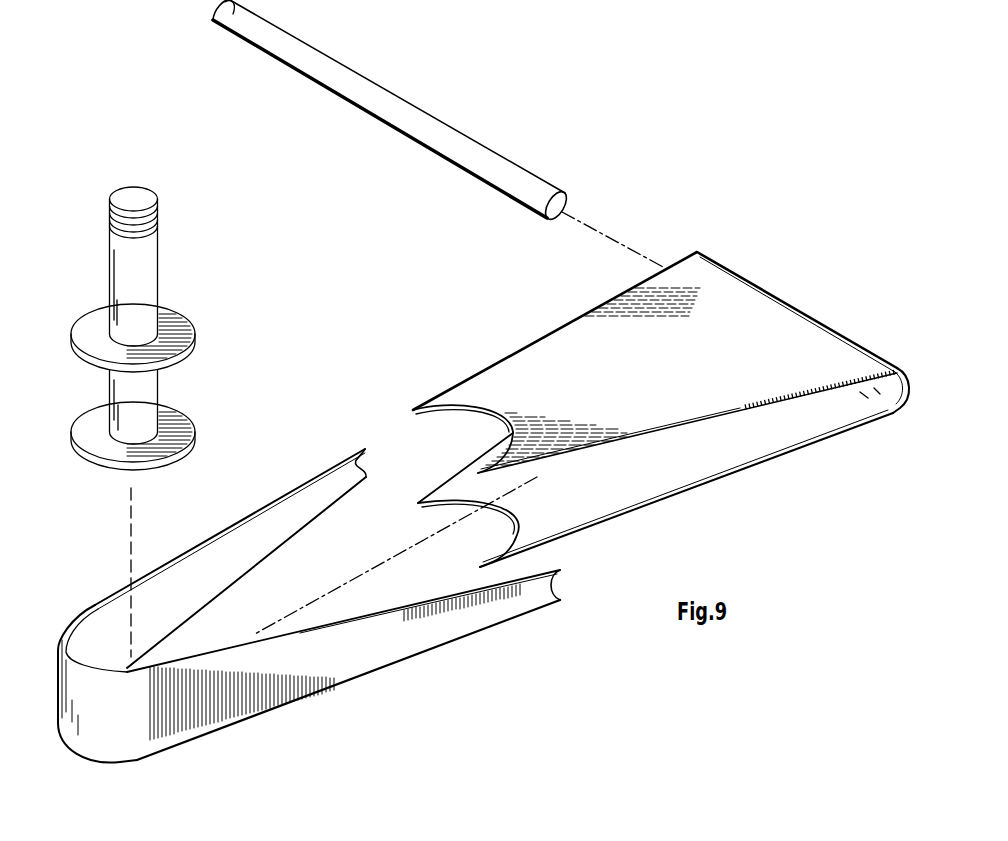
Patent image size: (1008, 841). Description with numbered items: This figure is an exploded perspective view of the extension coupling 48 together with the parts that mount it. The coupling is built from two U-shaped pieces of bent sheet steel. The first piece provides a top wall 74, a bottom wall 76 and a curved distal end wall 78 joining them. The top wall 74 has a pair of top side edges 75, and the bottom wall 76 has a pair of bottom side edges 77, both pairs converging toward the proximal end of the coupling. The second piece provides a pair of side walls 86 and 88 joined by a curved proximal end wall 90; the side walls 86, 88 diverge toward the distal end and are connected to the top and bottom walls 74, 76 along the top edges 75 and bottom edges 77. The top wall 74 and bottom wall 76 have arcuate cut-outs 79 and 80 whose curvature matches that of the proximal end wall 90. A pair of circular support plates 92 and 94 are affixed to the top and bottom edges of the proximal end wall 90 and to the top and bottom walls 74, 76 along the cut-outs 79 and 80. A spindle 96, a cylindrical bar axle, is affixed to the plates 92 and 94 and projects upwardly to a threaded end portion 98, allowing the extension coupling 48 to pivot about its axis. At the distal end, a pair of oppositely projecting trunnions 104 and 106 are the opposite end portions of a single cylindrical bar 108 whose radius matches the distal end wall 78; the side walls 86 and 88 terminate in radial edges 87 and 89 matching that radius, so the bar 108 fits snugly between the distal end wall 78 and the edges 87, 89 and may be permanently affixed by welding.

The extension coupling 48 is at (750, 220).
The top wall 74 is at (661, 375).
The top side edges 75 is at (537, 340).
The bottom wall 76 is at (644, 502).
The bottom side edges 77 is at (462, 470).
The distal end wall 78 is at (888, 392).
The arcuate cut-out 79 is at (500, 432).
The arcuate cut-out 80 is at (493, 517).
The side wall 86 is at (387, 665).
The radial edge 87 is at (553, 596).
The side wall 88 is at (239, 537).
The radial edge 89 is at (372, 462).
The proximal end wall 90 is at (103, 727).
The circular support plate 92 is at (175, 328).
The circular support plate 94 is at (173, 426).
The spindle 96 is at (154, 421).
The threaded end portion 98 is at (118, 213).
The trunnion 104 is at (406, 134).
The trunnion 106 is at (230, 17).
The cylindrical bar 108 is at (383, 107).